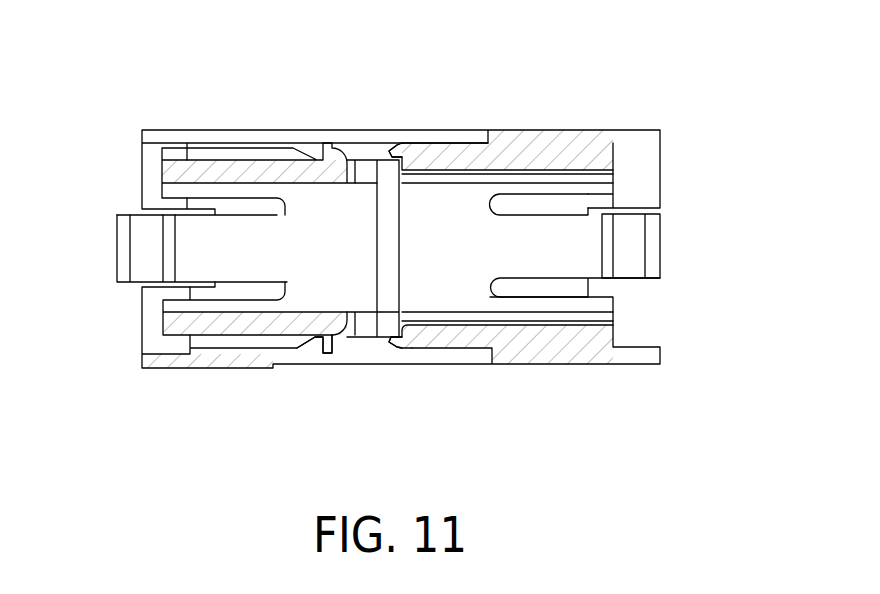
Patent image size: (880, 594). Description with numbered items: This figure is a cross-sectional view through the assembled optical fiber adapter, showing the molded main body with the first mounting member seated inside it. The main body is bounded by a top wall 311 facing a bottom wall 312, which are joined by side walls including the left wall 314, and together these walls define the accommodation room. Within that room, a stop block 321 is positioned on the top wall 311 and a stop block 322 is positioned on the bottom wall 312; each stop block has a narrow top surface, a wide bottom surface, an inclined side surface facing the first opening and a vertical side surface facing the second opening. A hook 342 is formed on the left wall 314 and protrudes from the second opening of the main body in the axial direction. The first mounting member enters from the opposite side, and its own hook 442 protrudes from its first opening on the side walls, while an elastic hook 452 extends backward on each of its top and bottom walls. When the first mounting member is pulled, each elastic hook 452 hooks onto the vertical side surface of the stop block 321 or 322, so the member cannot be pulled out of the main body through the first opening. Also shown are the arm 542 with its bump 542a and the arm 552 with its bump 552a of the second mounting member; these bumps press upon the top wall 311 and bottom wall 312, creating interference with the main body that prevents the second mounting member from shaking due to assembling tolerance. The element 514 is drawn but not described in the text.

The top wall 311 is at (258, 137).
The bottom wall 312 is at (245, 357).
The left wall 314 is at (153, 327).
The stop block 321 is at (316, 160).
The stop block 322 is at (316, 343).
The hook 342 is at (652, 242).
The hook 442 is at (123, 244).
The elastic hook 452 is at (332, 150).
The contact terminal 514 is at (555, 203).
The arm 542 is at (447, 157).
The bump 542a is at (398, 145).
The arm 552 is at (463, 337).
The bump 552a is at (403, 348).